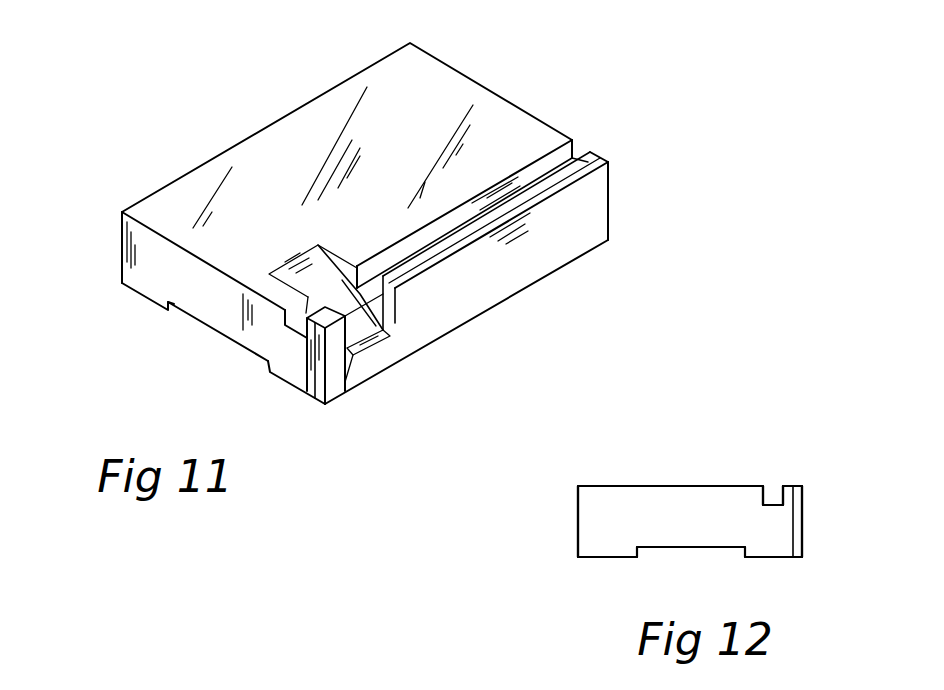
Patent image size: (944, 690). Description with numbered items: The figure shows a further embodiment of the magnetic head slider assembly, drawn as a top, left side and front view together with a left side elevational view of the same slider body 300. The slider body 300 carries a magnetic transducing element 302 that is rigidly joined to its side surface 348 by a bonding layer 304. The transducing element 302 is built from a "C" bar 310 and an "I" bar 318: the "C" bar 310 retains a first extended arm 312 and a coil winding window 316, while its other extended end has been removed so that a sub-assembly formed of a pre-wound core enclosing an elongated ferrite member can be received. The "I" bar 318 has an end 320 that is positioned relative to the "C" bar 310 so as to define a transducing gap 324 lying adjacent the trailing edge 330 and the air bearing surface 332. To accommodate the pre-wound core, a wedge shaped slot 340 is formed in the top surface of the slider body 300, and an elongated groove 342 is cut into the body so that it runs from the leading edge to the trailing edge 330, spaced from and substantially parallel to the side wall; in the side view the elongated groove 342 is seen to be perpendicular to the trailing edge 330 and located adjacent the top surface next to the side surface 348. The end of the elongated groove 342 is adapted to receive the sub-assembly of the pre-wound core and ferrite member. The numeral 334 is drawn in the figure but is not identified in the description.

In FIG. 11, the slider body 300 is at (457, 83).
In FIG. 12, the slider body 300 is at (663, 485).
In FIG. 11, the magnetic transducing element 302 is at (614, 217).
In FIG. 12, the magnetic transducing element 302 is at (800, 547).
In FIG. 11, the bonding layer 304 is at (594, 150).
In FIG. 12, the bonding layer 304 is at (795, 557).
In FIG. 11, the "C" bar 310 is at (418, 333).
In FIG. 11, the first extended arm 312 is at (383, 358).
In FIG. 11, the coil winding window 316 is at (392, 312).
In FIG. 11, the "I" bar 318 is at (328, 362).
In FIG. 11, the end 320 is at (337, 387).
In FIG. 11, the transducing gap 324 is at (347, 388).
In FIG. 11, the trailing edge 330 is at (147, 257).
In FIG. 12, the trailing edge 330 is at (588, 525).
In FIG. 11, the air bearing surface 332 is at (142, 294).
In FIG. 12, the air bearing surface 332 is at (607, 556).
In FIG. 11, the bottom recess 334 is at (195, 317).
In FIG. 12, the bottom recess 334 is at (692, 547).
In FIG. 11, the wedge shaped slot 340 is at (308, 282).
In FIG. 11, the elongated groove 342 is at (563, 155).
In FIG. 12, the elongated groove 342 is at (790, 467).
In FIG. 12, the side surface 348 is at (784, 526).